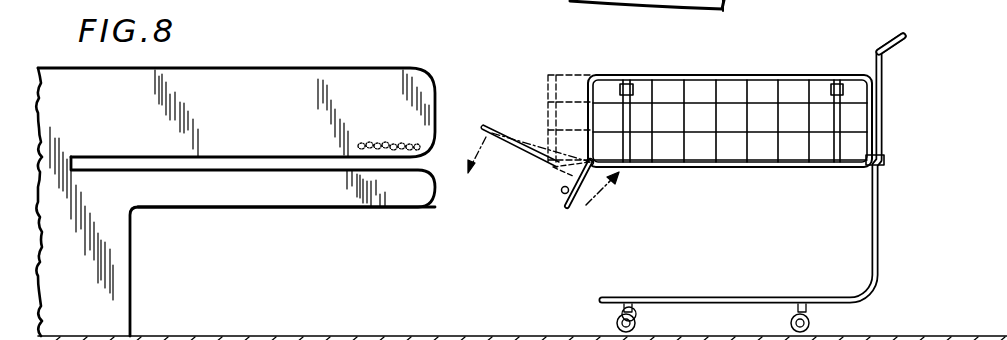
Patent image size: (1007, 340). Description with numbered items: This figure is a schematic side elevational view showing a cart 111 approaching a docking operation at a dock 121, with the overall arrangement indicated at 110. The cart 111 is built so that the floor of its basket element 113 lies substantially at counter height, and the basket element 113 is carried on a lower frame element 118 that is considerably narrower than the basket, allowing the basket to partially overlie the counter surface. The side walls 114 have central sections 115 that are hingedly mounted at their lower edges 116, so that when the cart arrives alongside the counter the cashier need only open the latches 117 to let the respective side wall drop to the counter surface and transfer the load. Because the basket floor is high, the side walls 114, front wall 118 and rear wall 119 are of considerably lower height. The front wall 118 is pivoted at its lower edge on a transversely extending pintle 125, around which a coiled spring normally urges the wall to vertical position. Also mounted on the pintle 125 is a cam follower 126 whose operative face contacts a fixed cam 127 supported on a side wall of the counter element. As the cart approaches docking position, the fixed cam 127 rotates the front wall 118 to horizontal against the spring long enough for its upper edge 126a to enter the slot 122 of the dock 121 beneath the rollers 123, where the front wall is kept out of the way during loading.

The shopping cart 110 is at (924, 4).
The cart 111 is at (628, 82).
The basket element 113 is at (882, 161).
The side walls 114 is at (610, 130).
The central sections 115 is at (735, 78).
The lower edges 116 is at (817, 167).
The latches 117 is at (636, 86).
The front wall 118 is at (593, 143).
The rear wall 119 is at (879, 104).
The dock 121 is at (433, 106).
The slot 122 is at (430, 167).
The rollers 123 is at (385, 141).
The pintle 125 is at (587, 160).
The cam follower 126 is at (574, 214).
The upper edge 126a is at (498, 143).
The fixed cam 127 is at (562, 191).